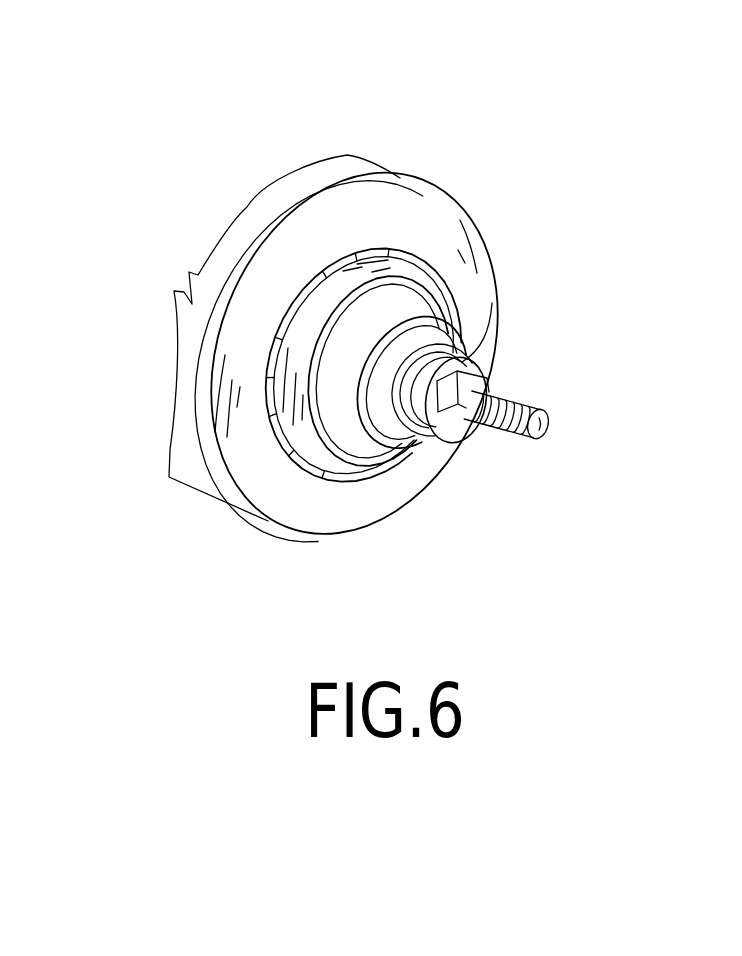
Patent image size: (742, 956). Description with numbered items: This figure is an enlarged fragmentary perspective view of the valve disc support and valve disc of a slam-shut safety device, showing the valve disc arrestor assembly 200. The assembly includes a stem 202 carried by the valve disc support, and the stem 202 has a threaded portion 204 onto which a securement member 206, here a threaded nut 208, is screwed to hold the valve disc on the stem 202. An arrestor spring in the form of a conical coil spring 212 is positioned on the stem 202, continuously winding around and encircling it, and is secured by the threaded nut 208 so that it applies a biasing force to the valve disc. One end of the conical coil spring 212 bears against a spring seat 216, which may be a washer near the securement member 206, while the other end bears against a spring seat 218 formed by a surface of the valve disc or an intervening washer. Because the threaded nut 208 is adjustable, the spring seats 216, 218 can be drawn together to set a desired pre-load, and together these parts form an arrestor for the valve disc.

The valve disc arrestor assembly 200 is at (245, 573).
The stem 202 is at (533, 410).
The threaded portion 204 is at (507, 400).
The securement member 206 is at (477, 432).
The threaded nut 208 is at (452, 445).
The conical coil spring 212 is at (318, 404).
The spring seat 216 is at (482, 393).
The spring seat 218 is at (403, 267).